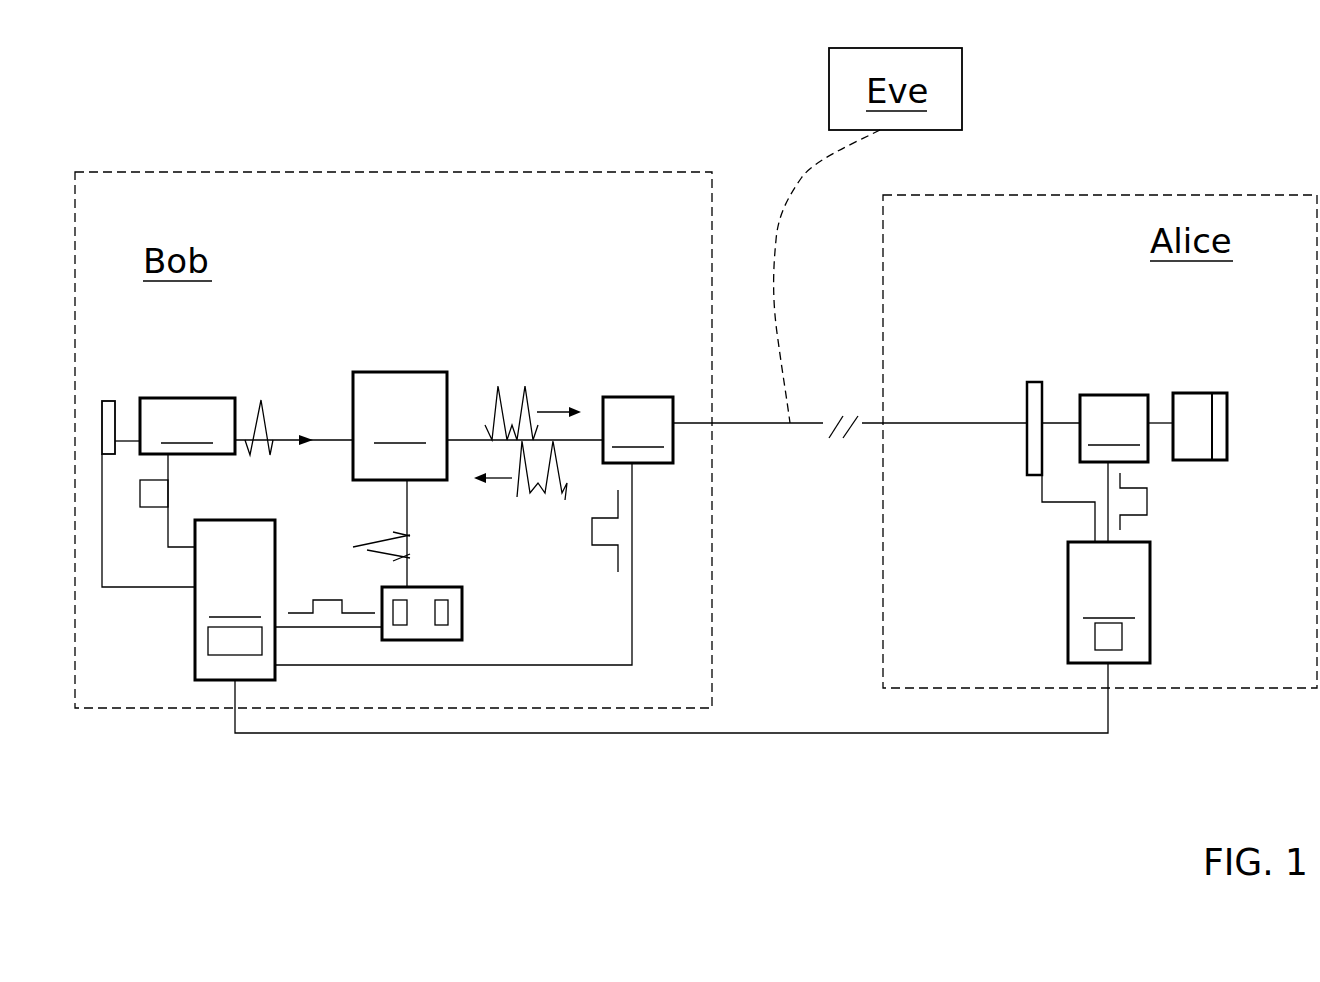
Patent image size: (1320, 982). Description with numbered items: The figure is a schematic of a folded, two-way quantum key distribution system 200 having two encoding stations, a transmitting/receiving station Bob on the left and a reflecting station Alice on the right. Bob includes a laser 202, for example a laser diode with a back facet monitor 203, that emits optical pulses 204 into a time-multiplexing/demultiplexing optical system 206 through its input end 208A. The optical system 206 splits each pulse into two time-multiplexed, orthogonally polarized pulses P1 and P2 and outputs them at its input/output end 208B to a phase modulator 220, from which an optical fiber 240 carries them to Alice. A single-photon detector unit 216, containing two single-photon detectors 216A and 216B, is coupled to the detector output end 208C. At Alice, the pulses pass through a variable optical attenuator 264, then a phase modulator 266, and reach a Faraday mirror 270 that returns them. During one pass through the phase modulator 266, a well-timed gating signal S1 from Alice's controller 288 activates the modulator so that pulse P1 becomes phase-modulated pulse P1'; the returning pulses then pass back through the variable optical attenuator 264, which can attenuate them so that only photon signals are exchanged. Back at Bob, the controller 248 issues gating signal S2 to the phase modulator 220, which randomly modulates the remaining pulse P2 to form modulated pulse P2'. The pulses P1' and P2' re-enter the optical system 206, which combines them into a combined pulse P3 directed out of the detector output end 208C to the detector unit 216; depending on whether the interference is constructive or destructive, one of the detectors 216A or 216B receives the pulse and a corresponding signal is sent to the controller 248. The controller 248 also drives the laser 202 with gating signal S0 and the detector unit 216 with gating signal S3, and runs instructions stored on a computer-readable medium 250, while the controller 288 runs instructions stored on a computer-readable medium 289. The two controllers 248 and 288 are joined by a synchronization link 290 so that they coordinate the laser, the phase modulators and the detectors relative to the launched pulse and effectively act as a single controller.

The folded QKD system 200 is at (462, 71).
The laser 202 is at (187, 426).
The back facet monitor 203 is at (102, 400).
The optical pulses 204 is at (267, 437).
The time-multiplexing/demultiplexing optical system 206 is at (400, 426).
The input end 208A is at (353, 420).
The input/output end 208B is at (447, 383).
The detector output end 208C is at (373, 481).
The single-photon detector unit 216 is at (462, 598).
The single-photon detector 216A is at (448, 612).
The single-photon detector 216B is at (407, 612).
The phase modulator 220 is at (638, 430).
The optical fiber 240 is at (764, 424).
The controller 248 is at (235, 600).
The computer-readable medium 250 is at (207, 642).
The variable optical attenuator 264 is at (1027, 382).
The phase modulator 266 is at (1114, 428).
The Faraday mirror 270 is at (1173, 410).
The controller 288 is at (1109, 602).
The computer-readable medium 289 is at (1122, 635).
The synchronization link 290 is at (420, 735).
The gating signal S0 is at (157, 508).
The gating signal S1 is at (1147, 503).
The gating signal S2 is at (618, 545).
The gating signal S3 is at (303, 613).
The pulse P1 is at (597, 330).
The pulse P2 is at (543, 352).
The combined pulse P3 is at (367, 547).
The phase-modulated pulse P1' is at (490, 523).
The modulated pulse P2' is at (541, 537).